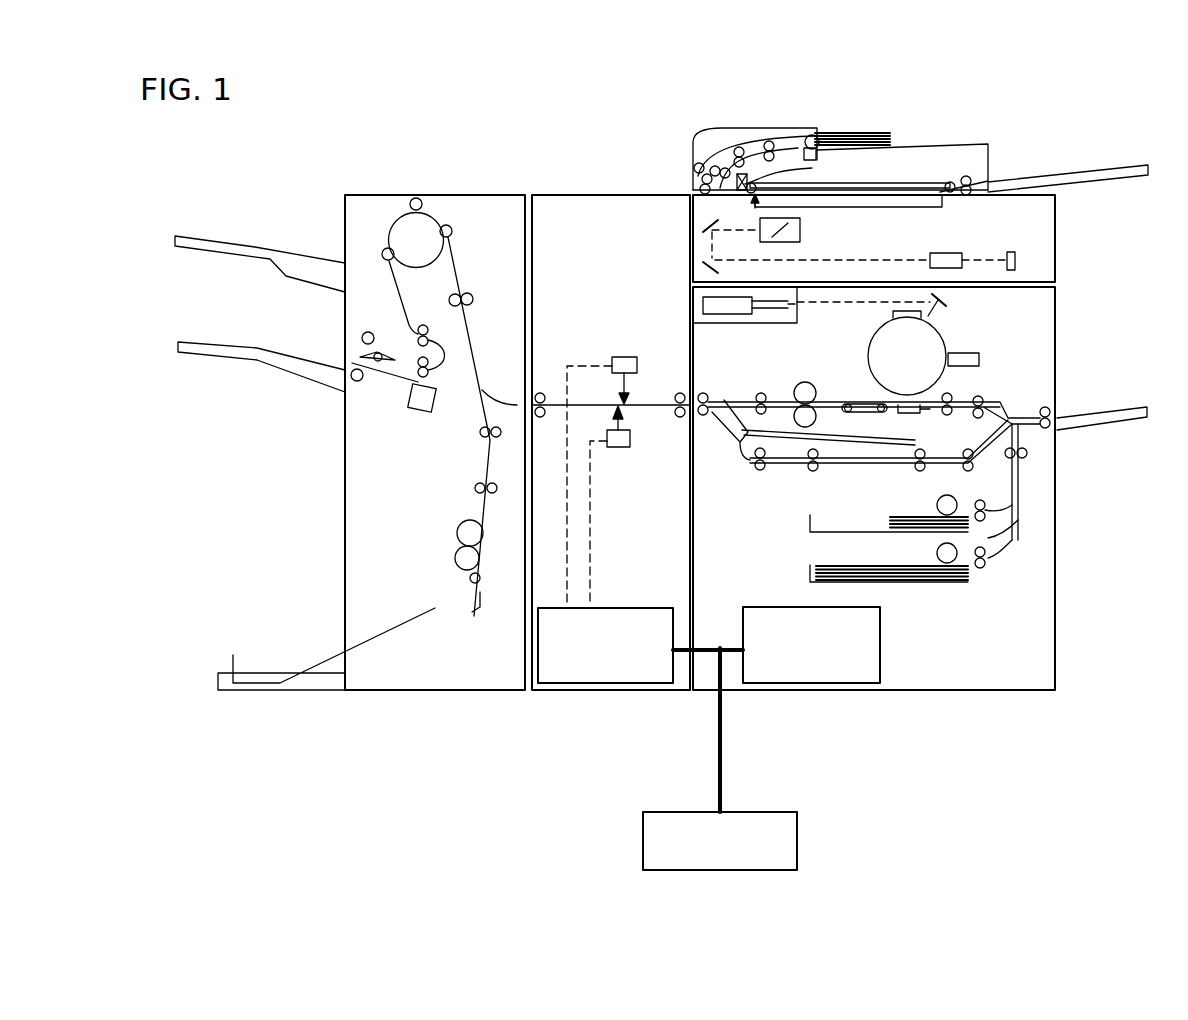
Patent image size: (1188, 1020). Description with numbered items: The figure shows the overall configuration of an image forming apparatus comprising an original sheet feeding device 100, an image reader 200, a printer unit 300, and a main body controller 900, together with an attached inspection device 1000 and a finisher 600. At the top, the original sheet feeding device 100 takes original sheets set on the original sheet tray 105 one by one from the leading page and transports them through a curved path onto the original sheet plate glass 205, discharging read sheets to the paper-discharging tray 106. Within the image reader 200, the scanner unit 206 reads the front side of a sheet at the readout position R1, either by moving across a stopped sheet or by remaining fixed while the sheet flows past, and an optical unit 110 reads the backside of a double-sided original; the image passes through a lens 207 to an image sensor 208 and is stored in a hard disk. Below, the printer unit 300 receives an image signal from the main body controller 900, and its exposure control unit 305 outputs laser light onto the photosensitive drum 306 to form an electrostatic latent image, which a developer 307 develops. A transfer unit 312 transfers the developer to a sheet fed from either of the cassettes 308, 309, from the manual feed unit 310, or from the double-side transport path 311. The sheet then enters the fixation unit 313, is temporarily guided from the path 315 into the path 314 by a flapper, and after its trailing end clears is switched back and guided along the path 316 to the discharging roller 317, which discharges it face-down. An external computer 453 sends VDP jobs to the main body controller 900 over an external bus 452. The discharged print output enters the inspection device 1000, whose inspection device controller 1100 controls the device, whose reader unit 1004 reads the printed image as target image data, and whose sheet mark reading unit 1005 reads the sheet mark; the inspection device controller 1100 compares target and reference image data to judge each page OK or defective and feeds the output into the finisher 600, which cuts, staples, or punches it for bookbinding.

The original sheet feeding device 100 is at (742, 126).
The original sheet tray 105 is at (915, 144).
The paper-discharging tray 106 is at (1066, 170).
The optical unit 110 is at (804, 169).
The image reader 200 is at (1057, 215).
The original sheet plate glass 205 is at (942, 207).
The scanner unit 206 is at (802, 230).
The lens 207 is at (940, 254).
The image sensor 208 is at (1015, 260).
The readout position R1 is at (738, 212).
The printer unit 300 is at (1057, 606).
The exposure control unit 305 is at (720, 325).
The photosensitive drum 306 is at (870, 347).
The developer 307 is at (963, 353).
The cassette 308 is at (800, 524).
The cassette 309 is at (800, 574).
The manual feed unit 310 is at (1125, 430).
The double-side transport path 311 is at (788, 466).
The transfer unit 312 is at (924, 412).
The fixation unit 313 is at (818, 392).
The path 314 is at (874, 446).
The path 315 is at (775, 392).
The path 316 is at (736, 432).
The discharging roller 317 is at (704, 393).
The external bus 452 is at (722, 737).
The external computer 453 is at (768, 810).
The finisher 600 is at (345, 606).
The main body controller 900 is at (880, 622).
The inspection device 1000 is at (630, 193).
The reader unit 1004 is at (632, 357).
The sheet mark reading unit 1005 is at (625, 448).
The inspection device controller 1100 is at (640, 608).